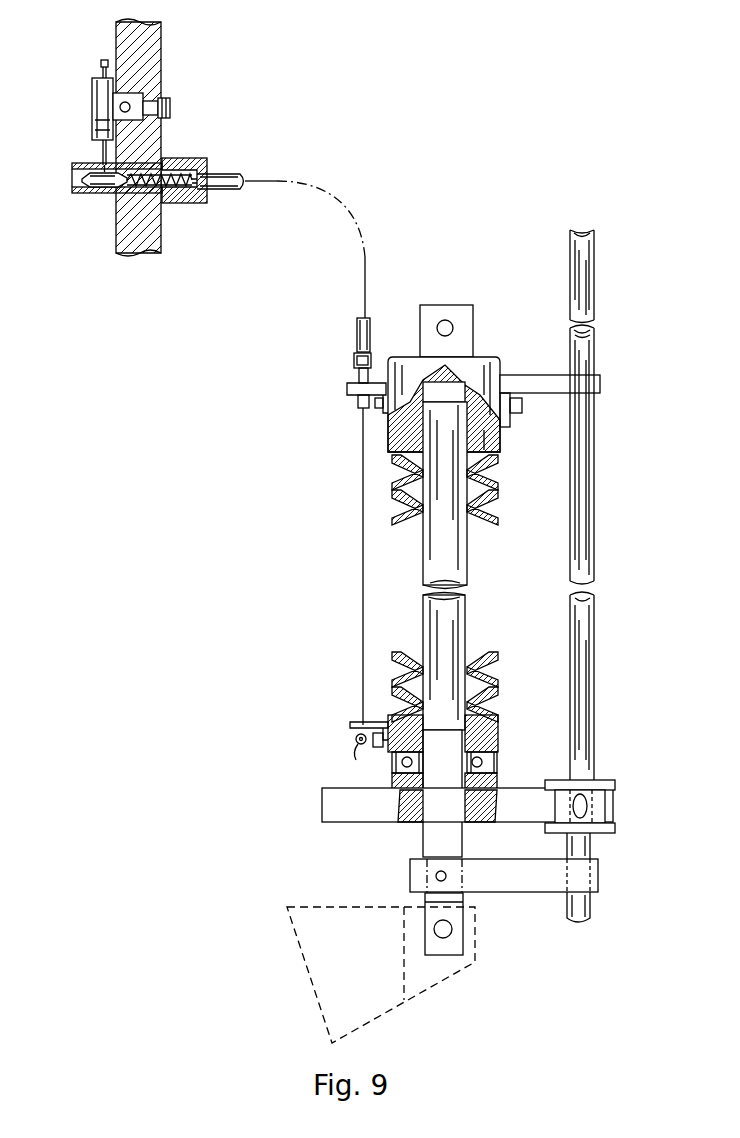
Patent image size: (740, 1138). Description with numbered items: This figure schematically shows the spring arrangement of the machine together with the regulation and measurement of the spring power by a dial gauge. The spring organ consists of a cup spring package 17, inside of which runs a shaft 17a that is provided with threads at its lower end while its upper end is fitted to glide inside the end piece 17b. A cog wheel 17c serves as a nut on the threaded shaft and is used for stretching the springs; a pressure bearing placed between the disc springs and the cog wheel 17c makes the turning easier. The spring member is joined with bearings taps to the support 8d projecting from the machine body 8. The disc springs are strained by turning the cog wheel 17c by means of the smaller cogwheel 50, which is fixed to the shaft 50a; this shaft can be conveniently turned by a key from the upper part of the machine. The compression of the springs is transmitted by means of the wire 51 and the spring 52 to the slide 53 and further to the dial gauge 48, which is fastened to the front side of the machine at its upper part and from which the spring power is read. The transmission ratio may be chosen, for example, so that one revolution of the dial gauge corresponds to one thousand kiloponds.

The body 8 is at (116, 45).
The support 8d is at (330, 920).
The dial gauge 48 is at (92, 106).
The spring 52 is at (178, 200).
The slide 53 is at (85, 195).
The wire 51 is at (360, 487).
The cup spring package 17 is at (497, 477).
The shaft 17a is at (455, 565).
The end piece 17b is at (490, 360).
The cog wheel 17c is at (512, 800).
The cogwheel 50 is at (600, 805).
The shaft 50a is at (580, 620).